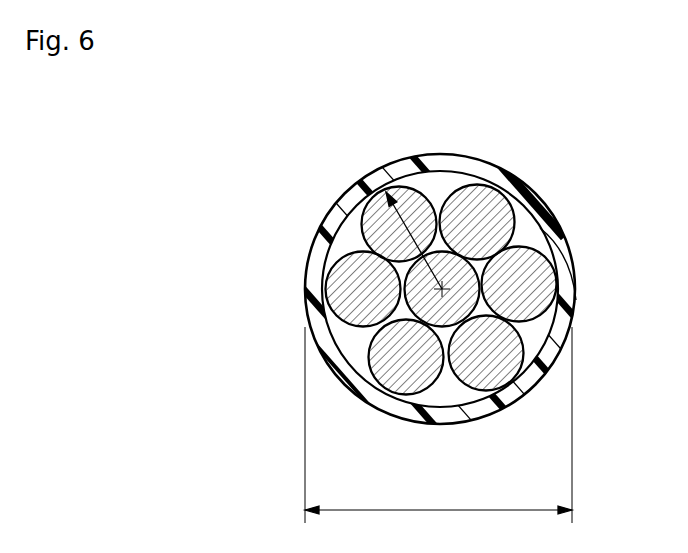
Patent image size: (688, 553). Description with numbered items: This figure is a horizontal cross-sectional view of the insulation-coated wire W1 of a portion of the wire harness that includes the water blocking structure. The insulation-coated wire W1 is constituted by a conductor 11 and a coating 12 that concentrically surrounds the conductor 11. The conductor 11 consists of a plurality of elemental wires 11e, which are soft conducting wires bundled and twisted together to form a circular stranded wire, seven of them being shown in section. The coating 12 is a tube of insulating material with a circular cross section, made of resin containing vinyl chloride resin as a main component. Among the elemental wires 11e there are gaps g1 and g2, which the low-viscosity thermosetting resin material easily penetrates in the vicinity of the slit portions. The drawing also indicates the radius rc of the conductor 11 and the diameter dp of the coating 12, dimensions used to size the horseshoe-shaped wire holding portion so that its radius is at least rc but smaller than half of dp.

The insulation-coated wire W1 is at (447, 292).
The conductor 11 is at (520, 238).
The elemental wire 11e is at (316, 245).
The coating 12 is at (552, 366).
The gap g1 is at (440, 183).
The gap g2 is at (566, 326).
The radius of the conductor rc is at (386, 192).
The diameter of the coating dp is at (438, 425).